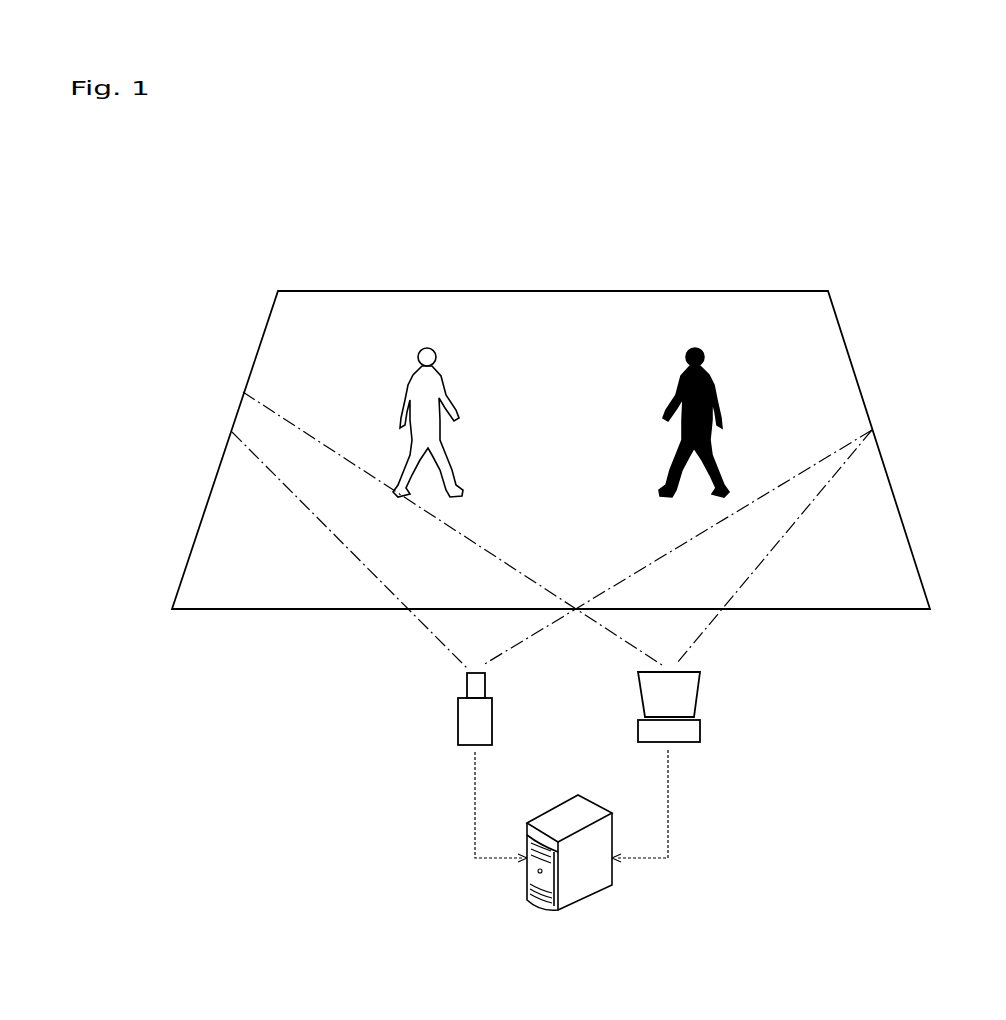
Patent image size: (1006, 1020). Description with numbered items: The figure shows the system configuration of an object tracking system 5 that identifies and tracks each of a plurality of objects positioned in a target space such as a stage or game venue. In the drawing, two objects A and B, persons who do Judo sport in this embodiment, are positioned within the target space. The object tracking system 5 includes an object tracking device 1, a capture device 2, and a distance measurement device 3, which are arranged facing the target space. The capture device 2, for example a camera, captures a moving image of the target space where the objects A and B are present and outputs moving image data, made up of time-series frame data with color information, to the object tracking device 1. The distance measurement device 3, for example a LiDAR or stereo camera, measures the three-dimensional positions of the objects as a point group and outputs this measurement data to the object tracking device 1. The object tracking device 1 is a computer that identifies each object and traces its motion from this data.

The object tracking device 1 is at (588, 890).
The capture device 2 is at (465, 723).
The distance measurement device 3 is at (690, 700).
The object tracking system 5 is at (722, 284).
The object A is at (412, 374).
The object B is at (685, 376).